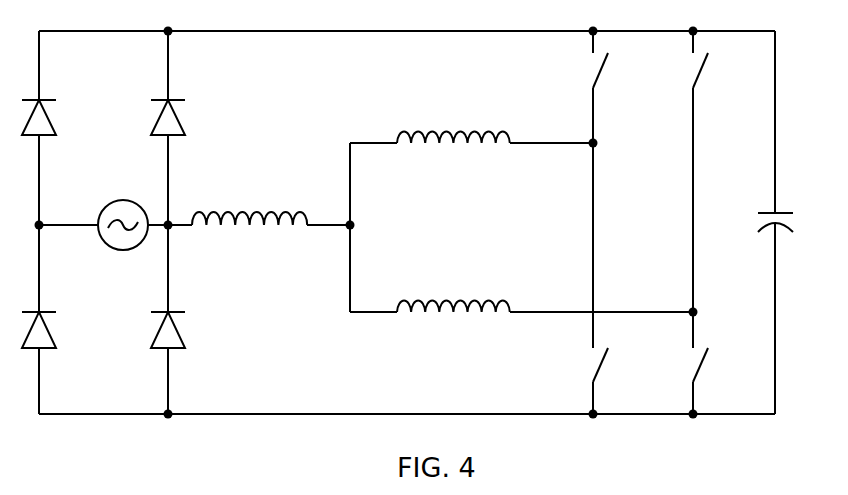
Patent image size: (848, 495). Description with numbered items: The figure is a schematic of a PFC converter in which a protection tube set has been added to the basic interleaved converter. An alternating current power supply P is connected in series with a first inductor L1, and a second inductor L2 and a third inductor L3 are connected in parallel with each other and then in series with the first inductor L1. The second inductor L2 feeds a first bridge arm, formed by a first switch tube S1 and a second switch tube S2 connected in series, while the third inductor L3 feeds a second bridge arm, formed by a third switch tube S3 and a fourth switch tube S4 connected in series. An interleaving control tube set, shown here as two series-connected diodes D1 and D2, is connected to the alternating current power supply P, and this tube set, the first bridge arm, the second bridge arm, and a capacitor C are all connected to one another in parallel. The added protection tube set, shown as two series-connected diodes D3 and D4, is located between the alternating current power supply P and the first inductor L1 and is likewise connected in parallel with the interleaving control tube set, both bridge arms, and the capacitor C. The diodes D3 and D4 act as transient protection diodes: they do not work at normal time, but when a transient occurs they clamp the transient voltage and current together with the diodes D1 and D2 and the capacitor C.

The diode D1 is at (63, 105).
The diode D2 is at (67, 330).
The diode D3 is at (192, 105).
The diode D4 is at (191, 330).
The alternating current power supply P is at (123, 208).
The first inductor L1 is at (249, 199).
The second inductor L2 is at (453, 118).
The third inductor L3 is at (453, 288).
The first switch tube S1 is at (578, 87).
The second switch tube S2 is at (575, 278).
The third switch tube S3 is at (717, 171).
The fourth switch tube S4 is at (715, 363).
The capacitor C is at (791, 223).